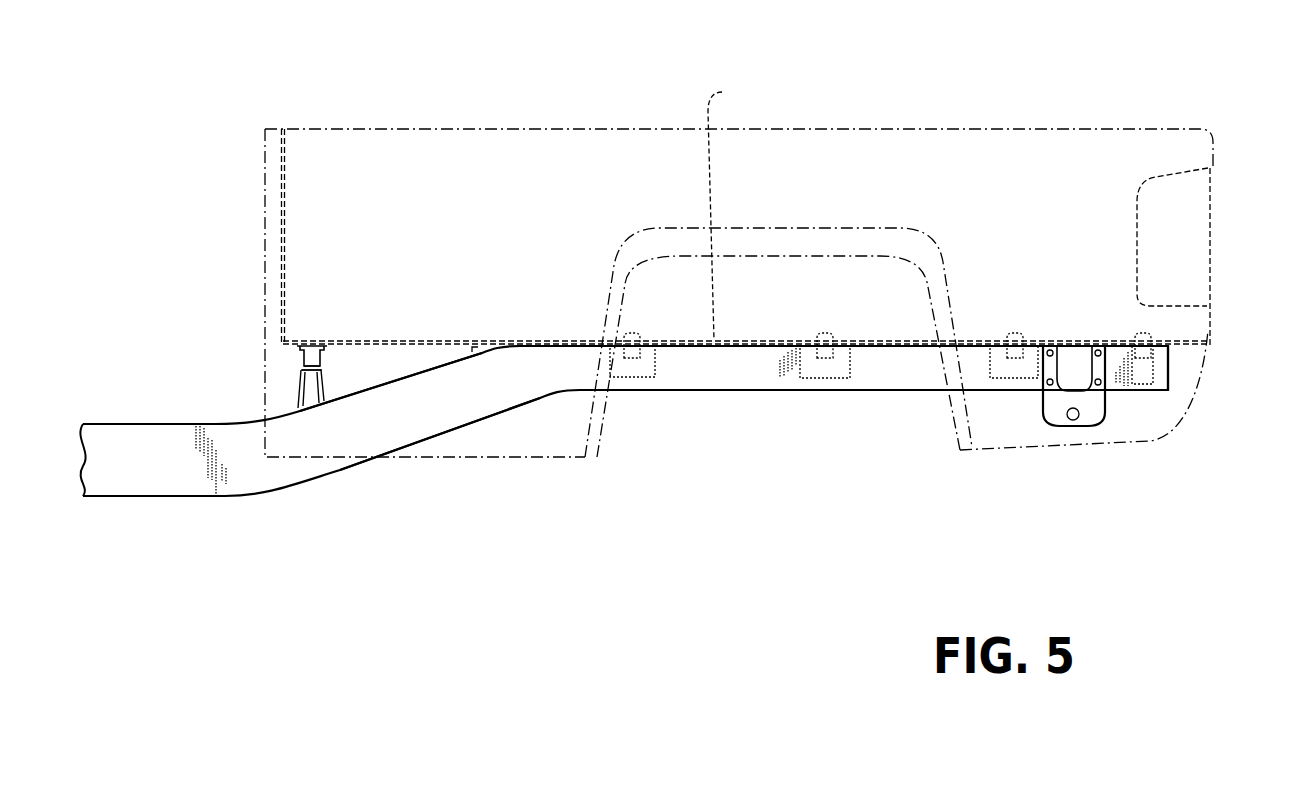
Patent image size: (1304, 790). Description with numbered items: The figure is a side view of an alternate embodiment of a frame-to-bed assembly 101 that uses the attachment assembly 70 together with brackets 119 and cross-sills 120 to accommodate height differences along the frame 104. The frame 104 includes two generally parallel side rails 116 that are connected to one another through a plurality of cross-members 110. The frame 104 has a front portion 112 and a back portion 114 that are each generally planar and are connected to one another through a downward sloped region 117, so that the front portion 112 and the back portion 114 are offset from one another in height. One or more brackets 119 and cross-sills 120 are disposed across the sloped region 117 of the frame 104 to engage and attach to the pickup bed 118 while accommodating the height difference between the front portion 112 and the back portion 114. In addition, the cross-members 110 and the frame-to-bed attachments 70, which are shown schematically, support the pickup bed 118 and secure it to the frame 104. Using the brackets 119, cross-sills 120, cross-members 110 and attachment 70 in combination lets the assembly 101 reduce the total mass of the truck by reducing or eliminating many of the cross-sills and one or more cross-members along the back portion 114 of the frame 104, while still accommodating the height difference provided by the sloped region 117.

The frame-to-bed assembly 101 is at (176, 156).
The frame 104 is at (229, 505).
The cross-member 110 is at (655, 360).
The front portion 112 is at (103, 423).
The back portion 114 is at (1170, 358).
The side rail 116 is at (132, 482).
The sloped region 117 is at (352, 447).
The pickup bed 118 is at (736, 210).
The bracket 119 is at (300, 398).
The cross-sill 120 is at (298, 357).
The attachment assembly 70 is at (632, 332).